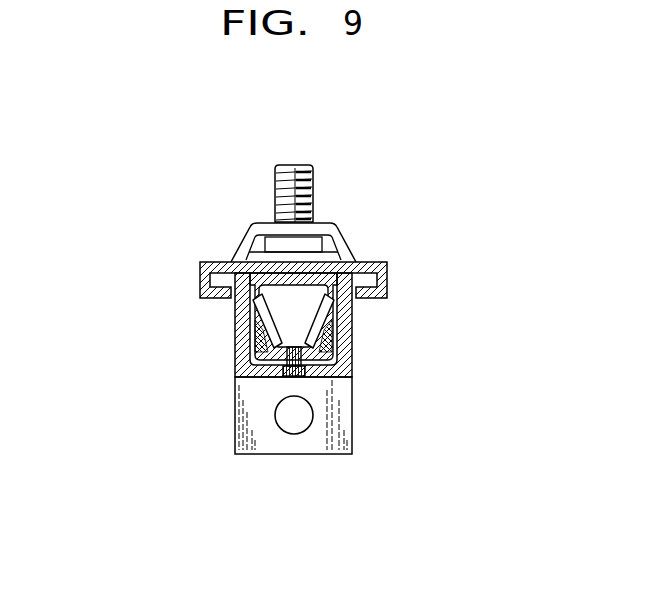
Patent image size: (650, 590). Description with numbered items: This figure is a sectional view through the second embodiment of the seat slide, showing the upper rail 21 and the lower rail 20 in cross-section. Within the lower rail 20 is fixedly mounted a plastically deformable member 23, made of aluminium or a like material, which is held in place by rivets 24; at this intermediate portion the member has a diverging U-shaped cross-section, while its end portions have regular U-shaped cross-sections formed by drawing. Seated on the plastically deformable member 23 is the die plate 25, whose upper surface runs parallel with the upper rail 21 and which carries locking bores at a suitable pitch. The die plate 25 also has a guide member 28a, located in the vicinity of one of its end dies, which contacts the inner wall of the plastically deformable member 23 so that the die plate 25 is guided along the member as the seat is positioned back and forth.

The lower rail 20 is at (350, 372).
The upper rail 21 is at (358, 280).
The plastically deformable member 23 is at (379, 338).
The rivet 24 is at (291, 377).
The die plate 25 is at (249, 262).
The guide member 28a is at (250, 334).